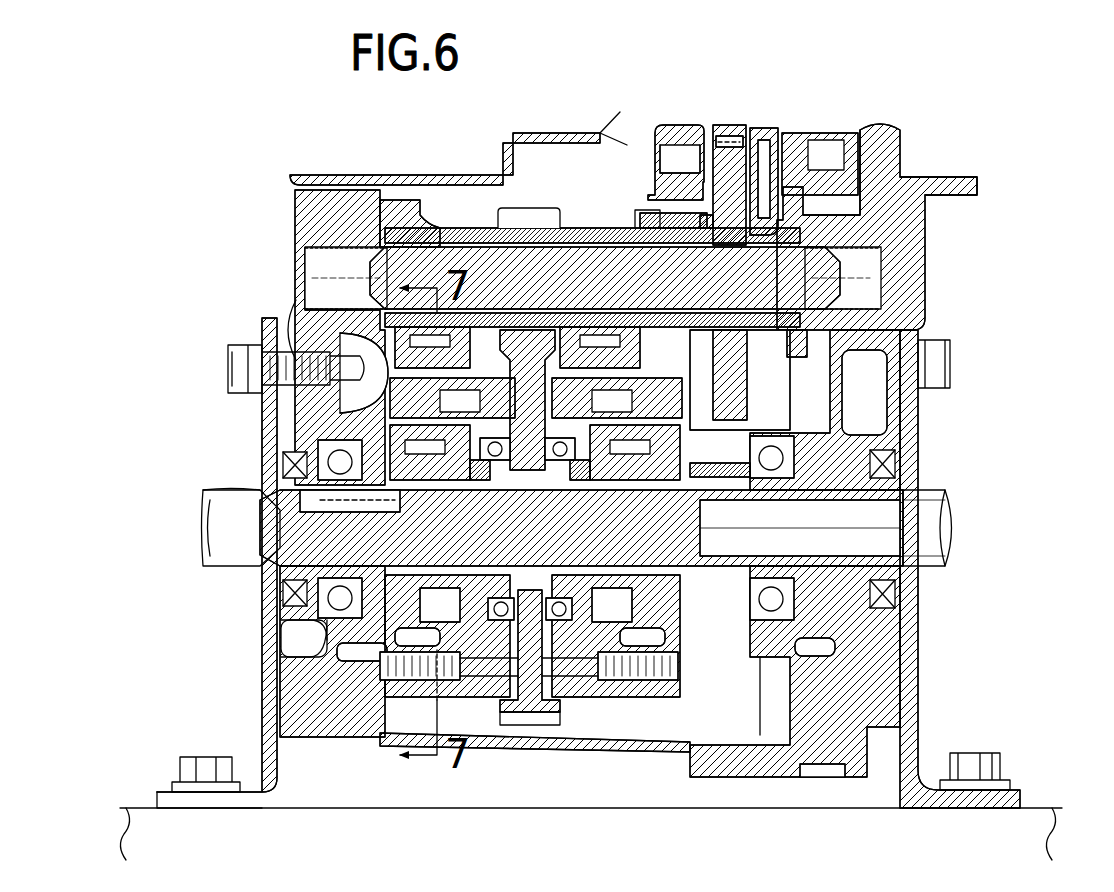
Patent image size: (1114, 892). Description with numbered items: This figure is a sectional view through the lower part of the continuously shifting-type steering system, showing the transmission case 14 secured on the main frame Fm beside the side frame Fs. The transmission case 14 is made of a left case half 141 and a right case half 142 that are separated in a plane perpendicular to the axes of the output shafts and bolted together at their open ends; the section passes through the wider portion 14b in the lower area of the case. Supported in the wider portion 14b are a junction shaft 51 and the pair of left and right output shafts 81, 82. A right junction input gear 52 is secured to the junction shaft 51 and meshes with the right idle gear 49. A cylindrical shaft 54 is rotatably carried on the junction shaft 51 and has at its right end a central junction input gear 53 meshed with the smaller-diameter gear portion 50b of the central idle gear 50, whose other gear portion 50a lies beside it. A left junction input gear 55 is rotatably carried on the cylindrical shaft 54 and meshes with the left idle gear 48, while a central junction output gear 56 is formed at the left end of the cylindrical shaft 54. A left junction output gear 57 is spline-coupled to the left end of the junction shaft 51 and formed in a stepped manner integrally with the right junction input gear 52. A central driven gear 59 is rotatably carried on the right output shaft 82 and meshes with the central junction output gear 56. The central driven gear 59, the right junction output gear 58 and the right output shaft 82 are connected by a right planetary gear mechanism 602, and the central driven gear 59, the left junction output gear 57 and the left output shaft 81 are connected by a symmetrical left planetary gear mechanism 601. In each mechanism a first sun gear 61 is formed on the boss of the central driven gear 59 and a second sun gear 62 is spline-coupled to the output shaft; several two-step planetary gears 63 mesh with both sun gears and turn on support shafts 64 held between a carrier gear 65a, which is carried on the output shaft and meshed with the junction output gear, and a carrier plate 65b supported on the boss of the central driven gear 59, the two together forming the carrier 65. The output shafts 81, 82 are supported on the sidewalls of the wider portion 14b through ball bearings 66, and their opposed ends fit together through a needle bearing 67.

The transmission case 14 is at (331, 170).
The left case half 141 is at (728, 825).
The right case half 142 is at (925, 262).
The wider portion 14b is at (300, 312).
The left idle gear 48 is at (682, 126).
The right idle gear 49 is at (845, 132).
The central idle gear 50 is at (779, 134).
The gear portion of central idle gear 50a is at (770, 128).
The smaller-diameter gear portion 50b is at (733, 136).
The junction shaft 51 is at (690, 296).
The right junction input gear 52 is at (774, 305).
The central junction input gear 53 is at (735, 222).
The cylindrical shaft 54 is at (590, 228).
The left junction input gear 55 is at (676, 162).
The central junction output gear 56 is at (533, 215).
The left junction output gear 57 is at (407, 200).
The right junction output gear 58 is at (645, 205).
The central driven gear 59 is at (542, 718).
The left planetary gear mechanism 601 is at (482, 700).
The right planetary gear mechanism 602 is at (620, 700).
The first sun gear 61 is at (482, 482).
The second sun gear 62 is at (470, 480).
The two-step planetary gears 63 is at (510, 332).
The support shafts 64 is at (536, 398).
The carrier 65 is at (527, 742).
The carrier gear 65a is at (345, 735).
The carrier plate 65b is at (395, 738).
The ball bearings 66 is at (903, 532).
The needle bearing 67 is at (402, 482).
The left output shaft 81 is at (228, 497).
The right output shaft 82 is at (937, 490).
The side frame Fs is at (927, 166).
The main frame Fm is at (1038, 822).